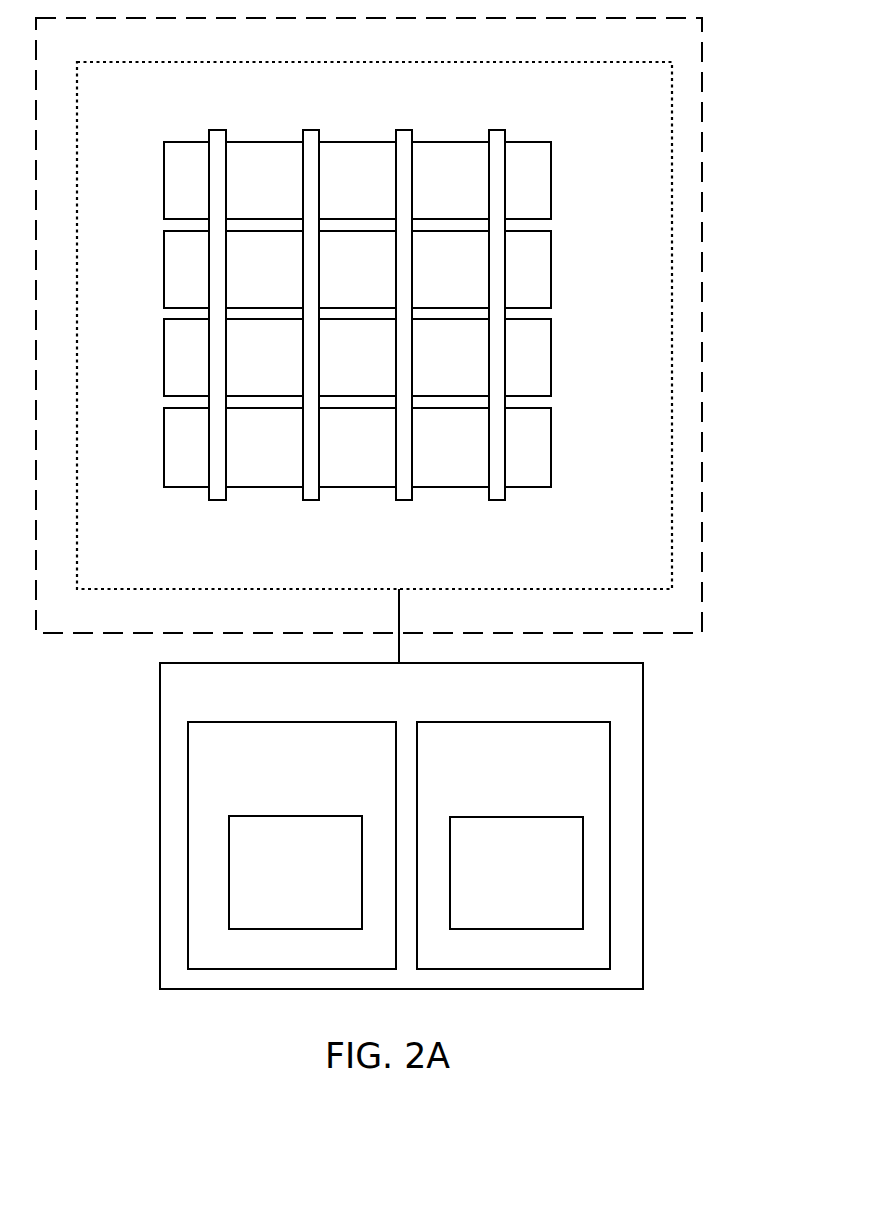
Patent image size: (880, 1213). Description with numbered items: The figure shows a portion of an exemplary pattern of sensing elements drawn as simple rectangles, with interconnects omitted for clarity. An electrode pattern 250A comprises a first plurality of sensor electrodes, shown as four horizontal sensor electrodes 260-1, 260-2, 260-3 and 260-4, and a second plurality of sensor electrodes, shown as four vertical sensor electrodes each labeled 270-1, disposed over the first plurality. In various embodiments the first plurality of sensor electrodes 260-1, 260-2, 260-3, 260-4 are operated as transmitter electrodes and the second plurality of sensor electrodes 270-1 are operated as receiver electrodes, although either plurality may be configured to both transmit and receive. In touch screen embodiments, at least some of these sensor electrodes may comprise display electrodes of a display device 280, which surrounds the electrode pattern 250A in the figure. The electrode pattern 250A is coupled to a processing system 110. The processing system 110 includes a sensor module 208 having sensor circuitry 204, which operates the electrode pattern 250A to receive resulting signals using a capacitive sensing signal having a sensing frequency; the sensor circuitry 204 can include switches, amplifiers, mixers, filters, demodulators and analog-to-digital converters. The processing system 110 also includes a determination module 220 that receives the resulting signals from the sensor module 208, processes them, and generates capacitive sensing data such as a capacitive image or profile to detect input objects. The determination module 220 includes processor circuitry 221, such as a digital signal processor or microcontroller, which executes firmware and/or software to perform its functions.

The display device 280 is at (702, 267).
The electrode pattern 250A is at (672, 110).
The sensor electrode 260-1 is at (540, 186).
The sensor electrode 260-2 is at (540, 276).
The sensor electrode 260-3 is at (540, 362).
The sensor electrode 260-4 is at (540, 452).
The sensor electrode 270-1 is at (219, 494).
The processing system 110 is at (401, 826).
The sensor module 208 is at (292, 845).
The sensor circuitry 204 is at (295, 872).
The determination module 220 is at (513, 845).
The processor circuitry 221 is at (516, 873).